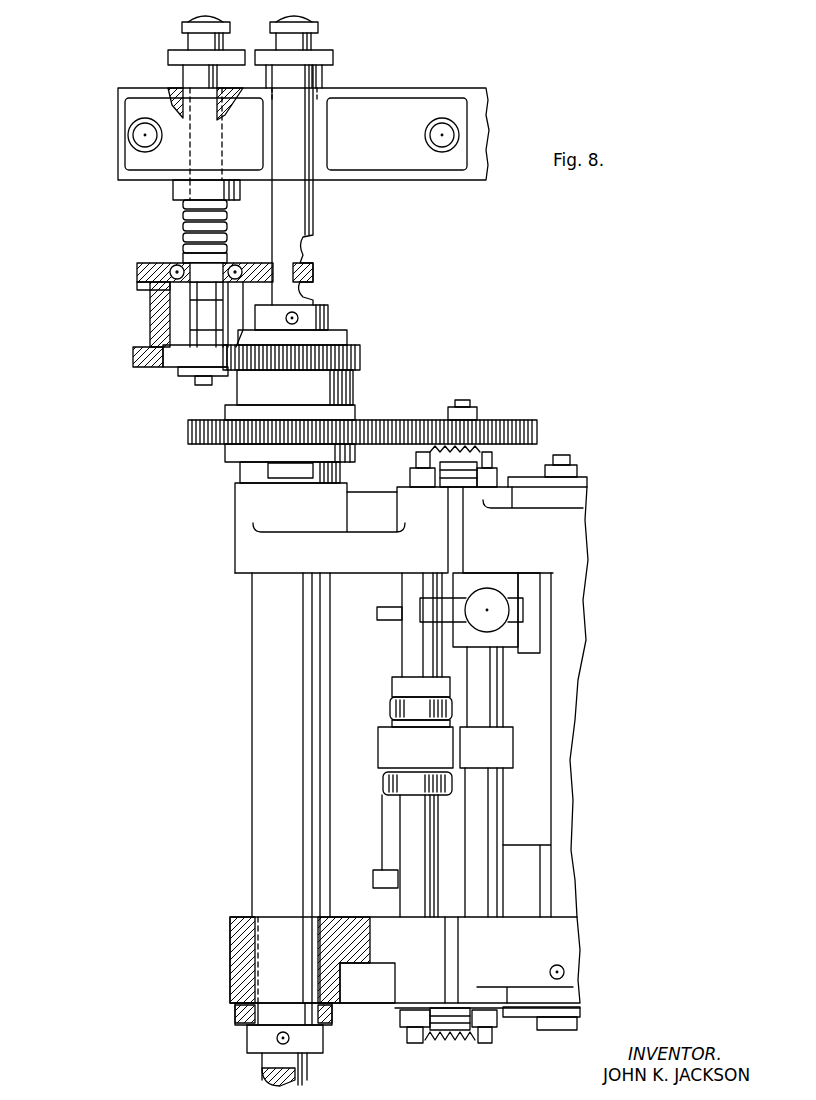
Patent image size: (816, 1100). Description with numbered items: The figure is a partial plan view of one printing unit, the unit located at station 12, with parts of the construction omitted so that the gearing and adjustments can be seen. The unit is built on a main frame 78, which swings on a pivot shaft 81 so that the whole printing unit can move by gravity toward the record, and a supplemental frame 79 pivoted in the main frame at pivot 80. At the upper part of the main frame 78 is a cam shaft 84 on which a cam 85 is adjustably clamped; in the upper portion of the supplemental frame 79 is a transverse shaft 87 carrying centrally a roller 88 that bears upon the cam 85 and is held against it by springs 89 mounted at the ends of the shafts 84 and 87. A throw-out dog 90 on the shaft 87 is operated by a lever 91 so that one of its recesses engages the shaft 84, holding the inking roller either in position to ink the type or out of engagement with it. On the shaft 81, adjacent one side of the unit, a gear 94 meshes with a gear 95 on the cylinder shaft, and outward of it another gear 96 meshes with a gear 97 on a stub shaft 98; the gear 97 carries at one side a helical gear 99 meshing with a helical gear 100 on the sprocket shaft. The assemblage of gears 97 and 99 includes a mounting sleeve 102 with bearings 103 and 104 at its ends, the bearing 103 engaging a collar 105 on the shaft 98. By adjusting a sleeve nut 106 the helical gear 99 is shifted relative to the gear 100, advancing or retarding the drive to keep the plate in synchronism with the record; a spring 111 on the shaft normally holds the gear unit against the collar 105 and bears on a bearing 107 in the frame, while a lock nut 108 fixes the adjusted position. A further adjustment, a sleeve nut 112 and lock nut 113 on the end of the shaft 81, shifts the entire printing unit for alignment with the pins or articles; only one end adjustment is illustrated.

The station 12 is at (204, 522).
The main frame 78 is at (382, 952).
The supplemental frame 79 is at (575, 953).
The pivot 80 is at (575, 462).
The shaft 81 is at (262, 1067).
The cam shaft 84 is at (405, 820).
The cam 85 is at (385, 748).
The transverse shaft 87 is at (497, 815).
The roller 88 is at (505, 752).
The springs 89 is at (438, 475).
The throw-out dog 90 is at (420, 608).
The lever 91 is at (512, 610).
The gear 94 is at (205, 445).
The gear 95 is at (425, 425).
The gear 96 is at (360, 358).
The gear 97 is at (140, 368).
The stub shaft 98 is at (198, 385).
The helical gear 99 is at (140, 262).
The helical gear 100 is at (318, 272).
The mounting sleeve 102 is at (150, 312).
The bearing 103 is at (178, 365).
The bearing 104 is at (172, 262).
The collar 105 is at (218, 376).
The sleeve nut 106 is at (168, 61).
The bearing 107 is at (173, 186).
The lock nut 108 is at (182, 29).
The spring 111 is at (228, 248).
The sleeve nut 112 is at (333, 63).
The lock nut 113 is at (318, 30).